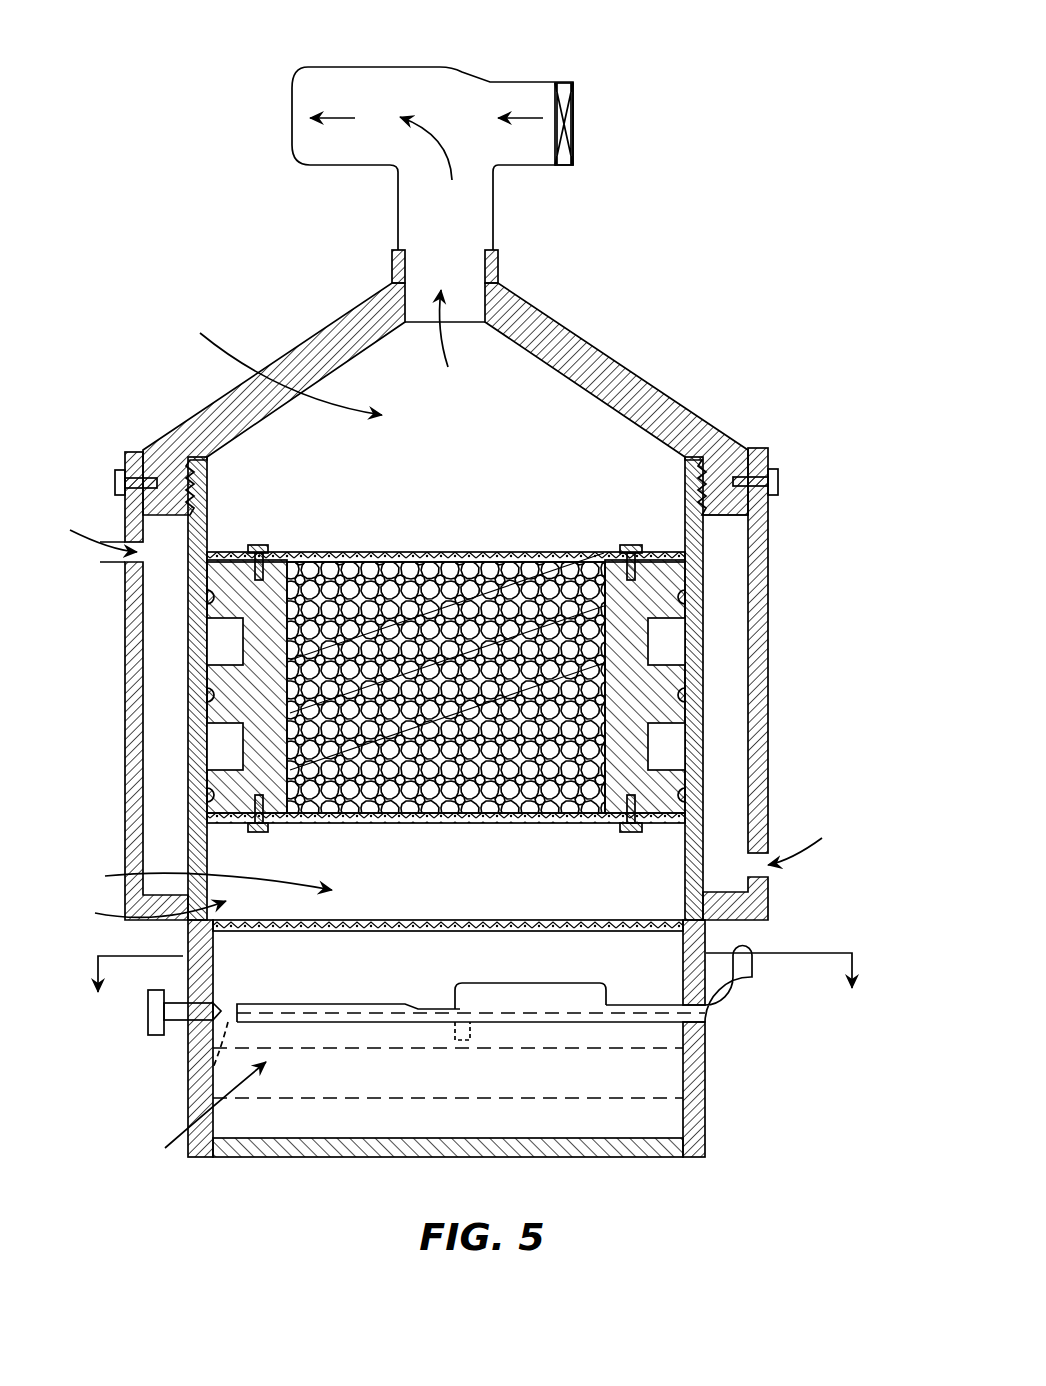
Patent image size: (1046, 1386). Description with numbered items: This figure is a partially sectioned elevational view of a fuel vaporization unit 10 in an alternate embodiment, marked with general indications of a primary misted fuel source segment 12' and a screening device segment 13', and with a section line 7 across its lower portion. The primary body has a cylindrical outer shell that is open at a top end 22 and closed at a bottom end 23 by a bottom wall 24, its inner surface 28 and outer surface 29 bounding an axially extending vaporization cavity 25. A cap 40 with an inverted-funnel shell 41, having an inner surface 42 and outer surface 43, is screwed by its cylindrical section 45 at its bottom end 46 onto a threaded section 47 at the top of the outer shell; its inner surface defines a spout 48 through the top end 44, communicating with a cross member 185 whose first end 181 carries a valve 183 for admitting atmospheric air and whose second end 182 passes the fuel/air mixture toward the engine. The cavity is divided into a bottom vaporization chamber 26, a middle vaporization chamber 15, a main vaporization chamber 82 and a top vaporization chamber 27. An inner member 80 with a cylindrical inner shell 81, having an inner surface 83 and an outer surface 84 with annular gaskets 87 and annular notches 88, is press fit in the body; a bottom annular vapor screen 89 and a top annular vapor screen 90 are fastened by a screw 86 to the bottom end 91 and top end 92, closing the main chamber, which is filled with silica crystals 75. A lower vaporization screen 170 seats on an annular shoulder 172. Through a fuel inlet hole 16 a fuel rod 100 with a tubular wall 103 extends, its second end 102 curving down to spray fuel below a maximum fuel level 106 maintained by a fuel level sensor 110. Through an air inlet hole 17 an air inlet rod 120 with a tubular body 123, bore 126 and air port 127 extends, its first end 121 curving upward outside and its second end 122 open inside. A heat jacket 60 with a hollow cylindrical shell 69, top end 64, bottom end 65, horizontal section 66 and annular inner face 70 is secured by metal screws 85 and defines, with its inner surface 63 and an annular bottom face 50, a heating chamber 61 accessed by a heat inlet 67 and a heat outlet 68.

The section line 7- 7 is at (475, 988).
The filtration apparatus 10 is at (700, 232).
The primary misted fuel source segment 12' is at (513, 1061).
The screening device segment 13' is at (564, 688).
The middle vaporization chamber 15 is at (202, 876).
The fuel inlet hole 16 is at (608, 979).
The air inlet hole 17 is at (681, 1003).
The top end 22 is at (700, 446).
The bottom end 23 is at (696, 1129).
The bottom wall 24 is at (616, 1152).
The vaporization cavity 25 is at (374, 912).
The bottom vaporization chamber 26 is at (411, 1112).
The top vaporization chamber 27 is at (277, 362).
The inner surface 28 is at (466, 894).
The outer surface 29 is at (708, 1096).
The cap 40 is at (484, 387).
The shell 41 is at (565, 336).
The inner surface 42 is at (592, 376).
The outer surface 43 is at (651, 380).
The top end 44 is at (500, 265).
The cylindrical section 45 is at (741, 446).
The bottom end 46 is at (745, 514).
The threaded section 47 is at (723, 440).
The spout 48 is at (449, 345).
The annular bottom face 50 is at (718, 526).
The heat jacket 60 is at (440, 688).
The heating chamber 61 is at (152, 582).
The inner surface 63 is at (742, 698).
The top end 64 is at (774, 463).
The bottom end 65 is at (772, 901).
The horizontal section 66 is at (758, 926).
The heat inlet 67 is at (809, 841).
The heat outlet 68 is at (88, 533).
The hollow cylindrical shell 69 is at (760, 673).
The annular inner face 70 is at (690, 905).
The silica crystals 75 is at (537, 630).
The inner member 80 is at (447, 678).
The cylindrical inner shell 81 is at (590, 552).
The main vaporization chamber 82 is at (420, 605).
The inner surface 83 is at (305, 550).
The outer surface 84 is at (235, 546).
The metal screws 85 is at (118, 476).
The screw 86 is at (262, 836).
The annular gaskets 87 is at (205, 597).
The annular notches 88 is at (220, 641).
The bottom annular vapor screen 89 is at (530, 833).
The top annular vapor screen 90 is at (452, 551).
The bottom end 91 is at (610, 832).
The top end 92 is at (654, 547).
The fuel rod 100 is at (541, 979).
The second end 102 is at (458, 1032).
The tubular wall 103 is at (496, 984).
The maximum fuel level 106 is at (182, 1092).
The fuel level sensor 110 is at (158, 1026).
The air inlet rod 120 is at (720, 962).
The first end 121 is at (753, 969).
The second end 122 is at (242, 1005).
The tubular body 123 is at (522, 1016).
The bore 126 is at (231, 1006).
The air port 127 is at (406, 1010).
The lower vaporization screen 170 is at (226, 933).
The annular shoulder 172 is at (738, 995).
The first end 181 is at (530, 82).
The second end 182 is at (322, 66).
The valve 183 is at (574, 135).
The cross member 185 is at (432, 66).